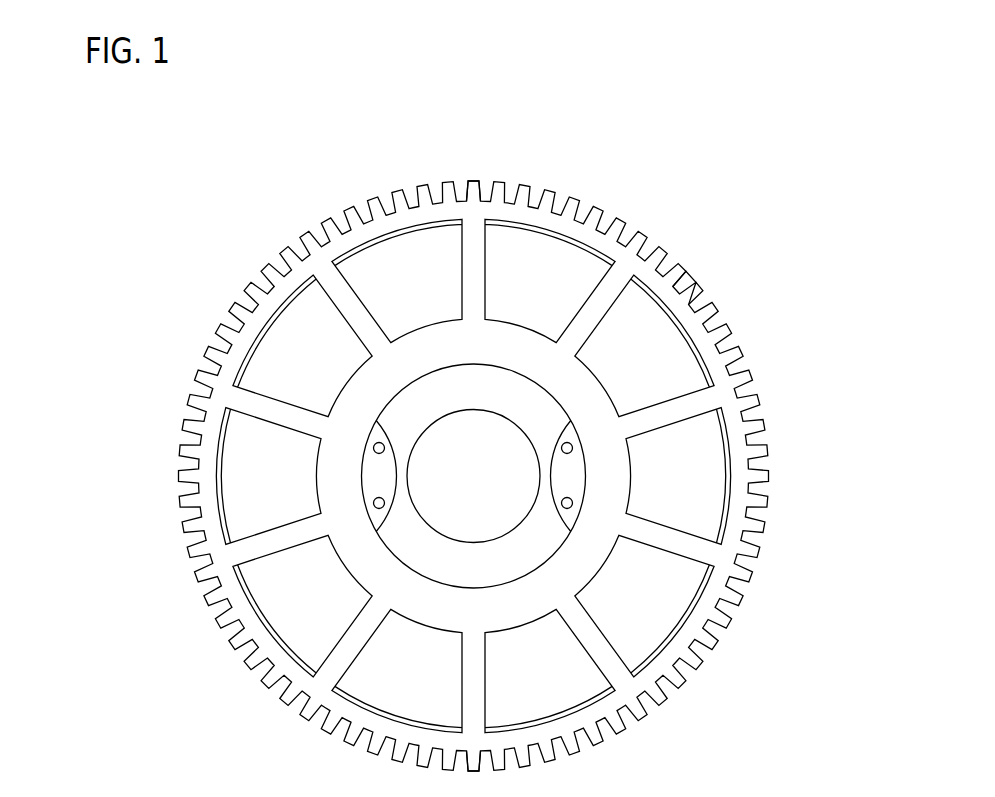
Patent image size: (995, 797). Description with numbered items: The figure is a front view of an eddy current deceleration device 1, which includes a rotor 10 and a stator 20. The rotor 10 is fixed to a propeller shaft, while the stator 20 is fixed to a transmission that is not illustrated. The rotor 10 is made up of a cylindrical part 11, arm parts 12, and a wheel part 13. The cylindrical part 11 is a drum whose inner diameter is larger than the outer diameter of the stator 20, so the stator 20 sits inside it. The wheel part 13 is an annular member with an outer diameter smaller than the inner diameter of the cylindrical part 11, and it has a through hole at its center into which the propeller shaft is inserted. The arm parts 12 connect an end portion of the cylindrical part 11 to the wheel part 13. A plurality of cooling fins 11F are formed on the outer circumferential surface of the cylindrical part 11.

The eddy current deceleration device 1 is at (481, 115).
The rotor 10 is at (800, 450).
The cylindrical part 11 is at (740, 490).
The cooling fins 11F is at (700, 290).
The arm parts 12 is at (473, 285).
The wheel part 13 is at (610, 480).
The stator 20 is at (285, 340).